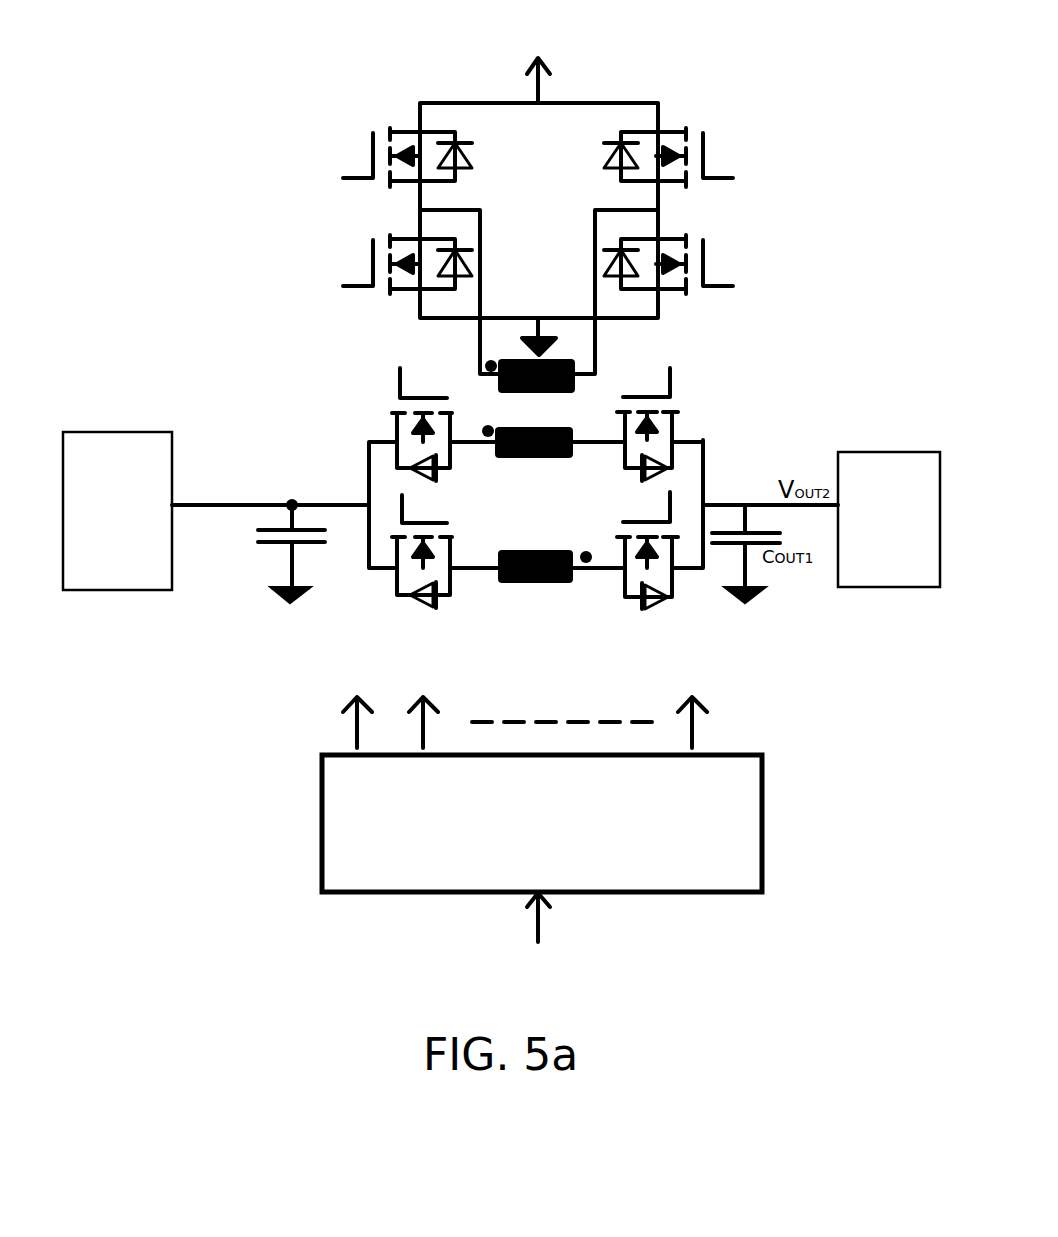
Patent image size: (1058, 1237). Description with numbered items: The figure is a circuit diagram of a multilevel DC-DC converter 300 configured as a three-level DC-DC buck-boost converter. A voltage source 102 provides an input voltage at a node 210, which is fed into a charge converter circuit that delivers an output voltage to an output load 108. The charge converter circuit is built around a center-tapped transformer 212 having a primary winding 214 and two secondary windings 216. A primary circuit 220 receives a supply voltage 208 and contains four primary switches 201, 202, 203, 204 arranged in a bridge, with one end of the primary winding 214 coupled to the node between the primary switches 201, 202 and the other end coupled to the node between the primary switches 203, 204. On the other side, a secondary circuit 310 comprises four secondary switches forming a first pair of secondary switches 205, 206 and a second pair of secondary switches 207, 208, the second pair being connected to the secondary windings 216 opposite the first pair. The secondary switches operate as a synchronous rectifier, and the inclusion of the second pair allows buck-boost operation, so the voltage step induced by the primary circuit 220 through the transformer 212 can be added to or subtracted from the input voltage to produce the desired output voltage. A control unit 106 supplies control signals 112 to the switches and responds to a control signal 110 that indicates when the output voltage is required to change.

The multilevel DC-DC converter 300 is at (262, 112).
The primary switch 201 is at (402, 117).
The primary switch 202 is at (352, 253).
The primary switch 203 is at (688, 128).
The primary switch 204 is at (677, 230).
The primary circuit 220 is at (300, 207).
The supply voltage Vsup 208 is at (578, 32).
The transformer 212 is at (614, 380).
The primary winding 214 is at (513, 357).
The secondary windings 216 is at (560, 493).
The secondary switch 205 is at (388, 430).
The secondary switch 206 is at (403, 602).
The secondary switch 207 is at (688, 420).
The secondary circuit 310 is at (733, 484).
The node 210 is at (290, 498).
The voltage source 102 is at (118, 430).
The output load 108 is at (888, 452).
The control unit 106 is at (762, 840).
The control signals 112 is at (762, 695).
The control signal 110 is at (538, 935).